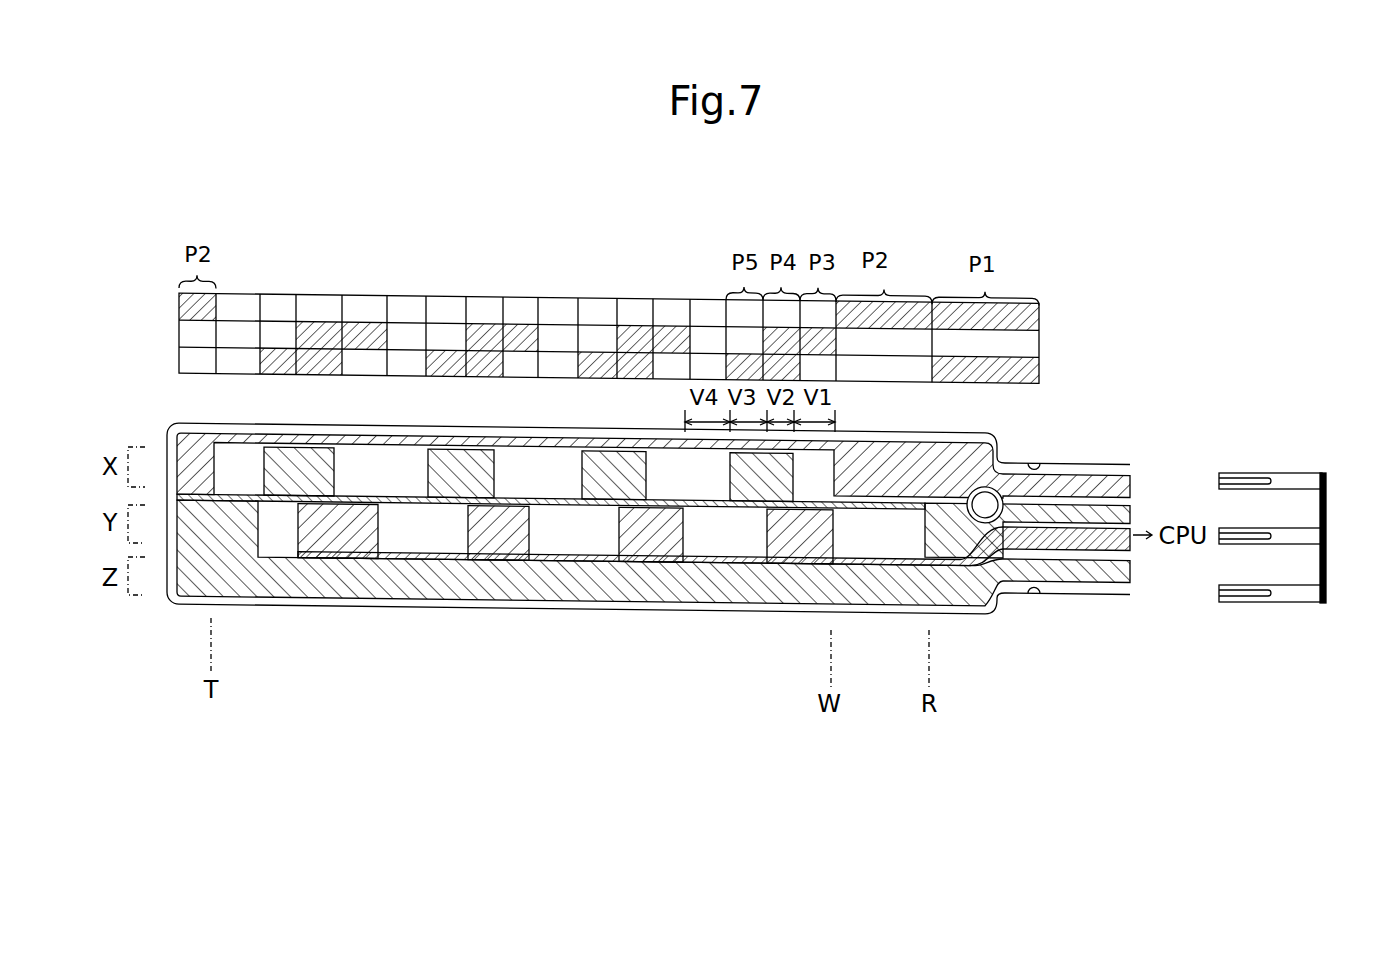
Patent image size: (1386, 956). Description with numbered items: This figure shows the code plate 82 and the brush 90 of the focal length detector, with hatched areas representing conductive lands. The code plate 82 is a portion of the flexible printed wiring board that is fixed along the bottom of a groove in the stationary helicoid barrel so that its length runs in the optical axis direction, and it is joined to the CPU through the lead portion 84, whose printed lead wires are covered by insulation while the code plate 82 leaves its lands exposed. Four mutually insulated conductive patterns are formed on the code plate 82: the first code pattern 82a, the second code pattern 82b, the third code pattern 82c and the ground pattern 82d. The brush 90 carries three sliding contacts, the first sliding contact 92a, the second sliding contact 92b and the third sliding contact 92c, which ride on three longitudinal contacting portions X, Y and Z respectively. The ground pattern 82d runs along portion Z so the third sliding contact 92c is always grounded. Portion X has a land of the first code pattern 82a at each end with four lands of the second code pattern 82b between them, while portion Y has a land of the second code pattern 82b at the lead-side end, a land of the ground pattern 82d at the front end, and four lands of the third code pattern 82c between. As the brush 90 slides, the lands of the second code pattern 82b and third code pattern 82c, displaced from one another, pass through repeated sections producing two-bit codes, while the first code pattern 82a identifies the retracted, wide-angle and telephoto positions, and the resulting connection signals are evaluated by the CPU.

The code plate 82 is at (524, 616).
The first code pattern 82a is at (197, 442).
The second code pattern 82b is at (308, 457).
The third code pattern 82c is at (353, 512).
The ground pattern 82d is at (641, 600).
The lead portion 84 is at (1122, 459).
The brush 90 is at (1299, 540).
The first sliding contact 92a is at (1298, 478).
The second sliding contact 92b is at (1298, 535).
The third sliding contact 92c is at (1298, 592).